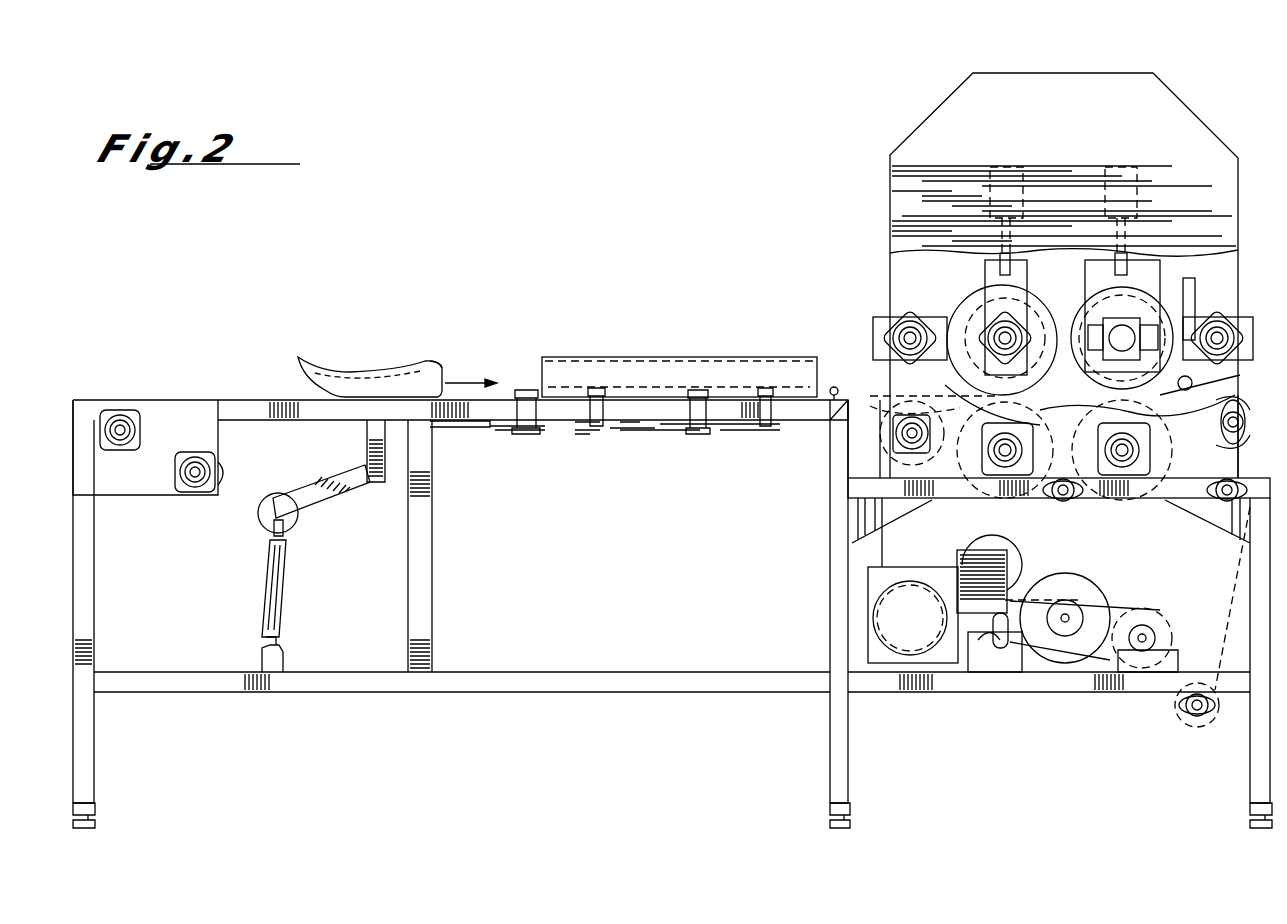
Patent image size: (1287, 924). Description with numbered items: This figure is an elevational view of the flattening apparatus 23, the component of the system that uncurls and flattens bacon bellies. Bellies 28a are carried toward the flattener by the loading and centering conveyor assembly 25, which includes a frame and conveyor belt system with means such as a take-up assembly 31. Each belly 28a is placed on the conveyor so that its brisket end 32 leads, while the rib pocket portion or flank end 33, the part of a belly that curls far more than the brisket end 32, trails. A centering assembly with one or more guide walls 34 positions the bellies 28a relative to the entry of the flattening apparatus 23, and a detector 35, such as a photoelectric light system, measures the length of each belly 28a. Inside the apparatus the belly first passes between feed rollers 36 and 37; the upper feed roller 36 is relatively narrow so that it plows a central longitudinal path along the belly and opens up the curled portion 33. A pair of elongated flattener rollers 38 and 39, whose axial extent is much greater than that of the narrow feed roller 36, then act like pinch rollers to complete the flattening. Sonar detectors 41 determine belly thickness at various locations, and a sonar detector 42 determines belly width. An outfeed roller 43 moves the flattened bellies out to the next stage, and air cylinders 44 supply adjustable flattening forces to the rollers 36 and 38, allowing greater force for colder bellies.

The flattening apparatus 23 is at (1198, 108).
The loading and centering conveyor assembly 25 is at (226, 357).
The belly 28a is at (385, 378).
The take-up assembly 31 is at (303, 492).
The brisket end 32 is at (437, 364).
The rib pocket portion or flank end 33 is at (333, 378).
The guide walls 34 is at (620, 385).
The detector 35 is at (836, 382).
The upper feed roller 36 is at (984, 297).
The feed roller 37 is at (1000, 440).
The flattener roller 38 is at (1125, 468).
The flattener roller 39 is at (1122, 440).
The sonar detectors 41 is at (1185, 300).
The sonar detector 42 is at (1215, 385).
The outfeed roller 43 is at (1245, 420).
The air cylinders 44 is at (1105, 170).